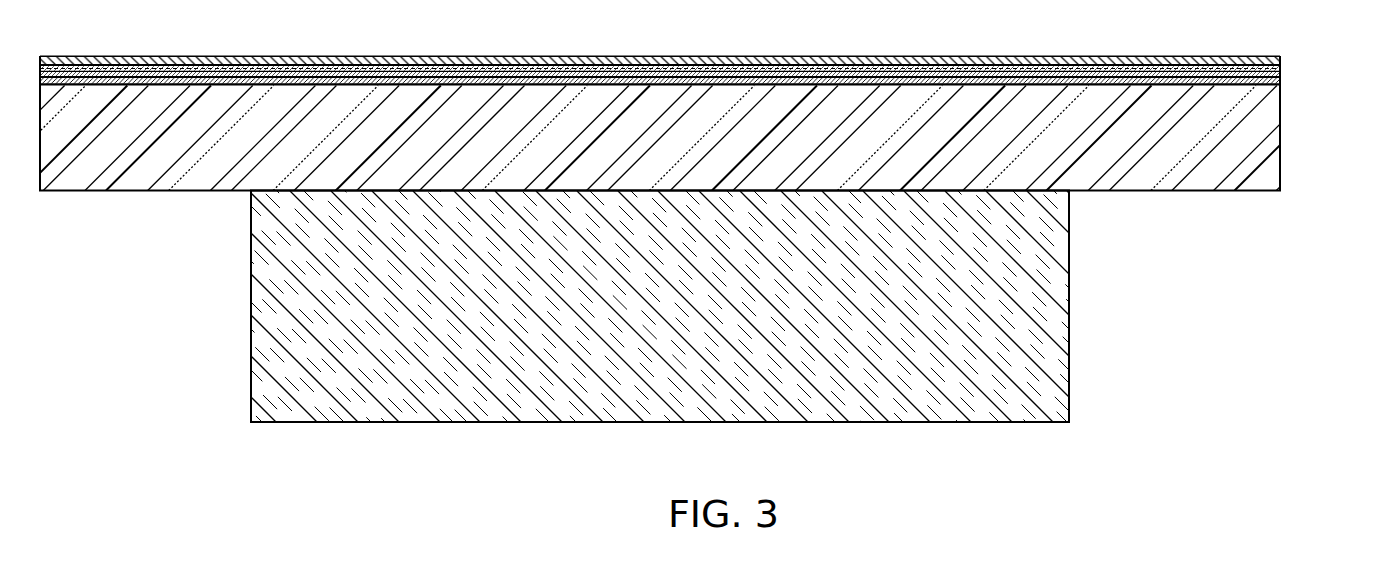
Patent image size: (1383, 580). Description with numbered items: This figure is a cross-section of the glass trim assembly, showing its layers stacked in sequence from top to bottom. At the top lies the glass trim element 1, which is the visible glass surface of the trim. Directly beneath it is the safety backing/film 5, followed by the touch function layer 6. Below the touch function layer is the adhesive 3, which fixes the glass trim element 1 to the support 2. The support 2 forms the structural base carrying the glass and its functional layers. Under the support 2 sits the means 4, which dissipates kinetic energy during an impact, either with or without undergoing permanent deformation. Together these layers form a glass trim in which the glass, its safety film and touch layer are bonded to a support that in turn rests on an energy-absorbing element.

The glass trim element 1 is at (1275, 61).
The safety backing/film 5 is at (1275, 67).
The touch function layer 6 is at (1275, 72).
The adhesive 3 is at (1275, 78).
The support 2 is at (1268, 158).
The means with a permanent deformation or not to dissipate the kinetic energy during 4 is at (1053, 355).